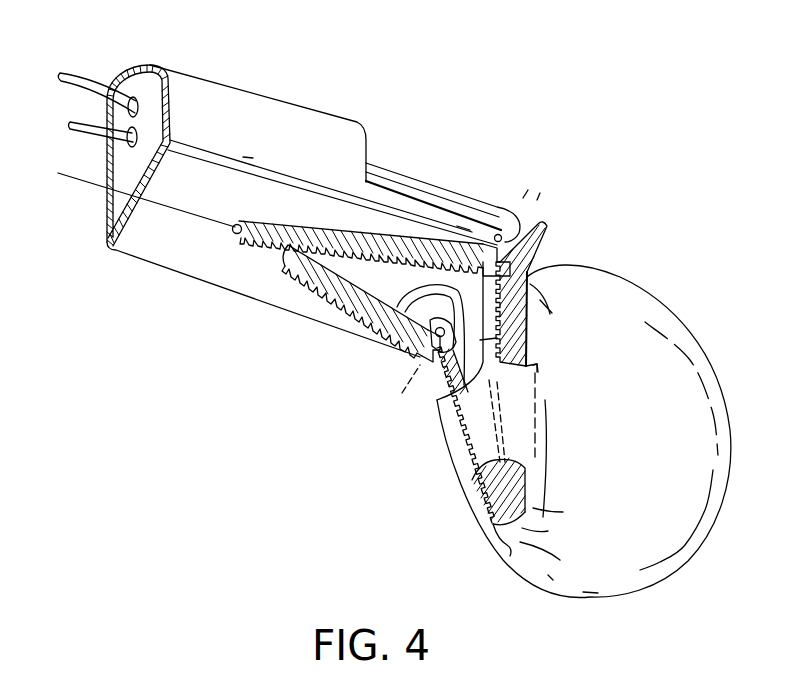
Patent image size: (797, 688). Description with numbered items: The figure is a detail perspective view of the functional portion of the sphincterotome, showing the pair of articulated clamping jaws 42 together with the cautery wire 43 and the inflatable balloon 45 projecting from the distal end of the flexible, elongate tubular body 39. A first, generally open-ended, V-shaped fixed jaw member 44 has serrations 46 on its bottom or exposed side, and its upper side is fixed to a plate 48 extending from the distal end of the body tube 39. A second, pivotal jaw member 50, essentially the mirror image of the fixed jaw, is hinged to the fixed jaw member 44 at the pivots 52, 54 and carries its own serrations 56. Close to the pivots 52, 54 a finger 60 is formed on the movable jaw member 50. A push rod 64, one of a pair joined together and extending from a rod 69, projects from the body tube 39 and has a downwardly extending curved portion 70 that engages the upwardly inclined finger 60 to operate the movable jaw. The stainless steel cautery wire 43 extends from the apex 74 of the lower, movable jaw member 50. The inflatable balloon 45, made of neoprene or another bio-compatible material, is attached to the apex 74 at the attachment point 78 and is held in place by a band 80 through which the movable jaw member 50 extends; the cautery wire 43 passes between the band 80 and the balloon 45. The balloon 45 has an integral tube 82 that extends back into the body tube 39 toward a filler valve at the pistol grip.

The tubular body 39 is at (266, 95).
The integral tube 82 is at (98, 88).
The rod 69 is at (90, 118).
The cautery wire 43 is at (72, 180).
The plate 48 is at (157, 257).
The fixed jaw member 44 is at (256, 220).
The serrations 46 is at (287, 262).
The pivot 54 is at (395, 308).
The push rod 64 is at (408, 177).
The pivot 52 is at (499, 233).
The curved portion 70 is at (514, 221).
The finger 60 is at (547, 232).
The serrations 56 is at (527, 325).
The pivotal jaw member 50 is at (527, 353).
The inflatable balloon 45 is at (638, 481).
The band 80 is at (472, 440).
The apex 74 is at (490, 523).
The attachment point 78 is at (508, 550).
The articulated clamping jaws 42 is at (336, 439).